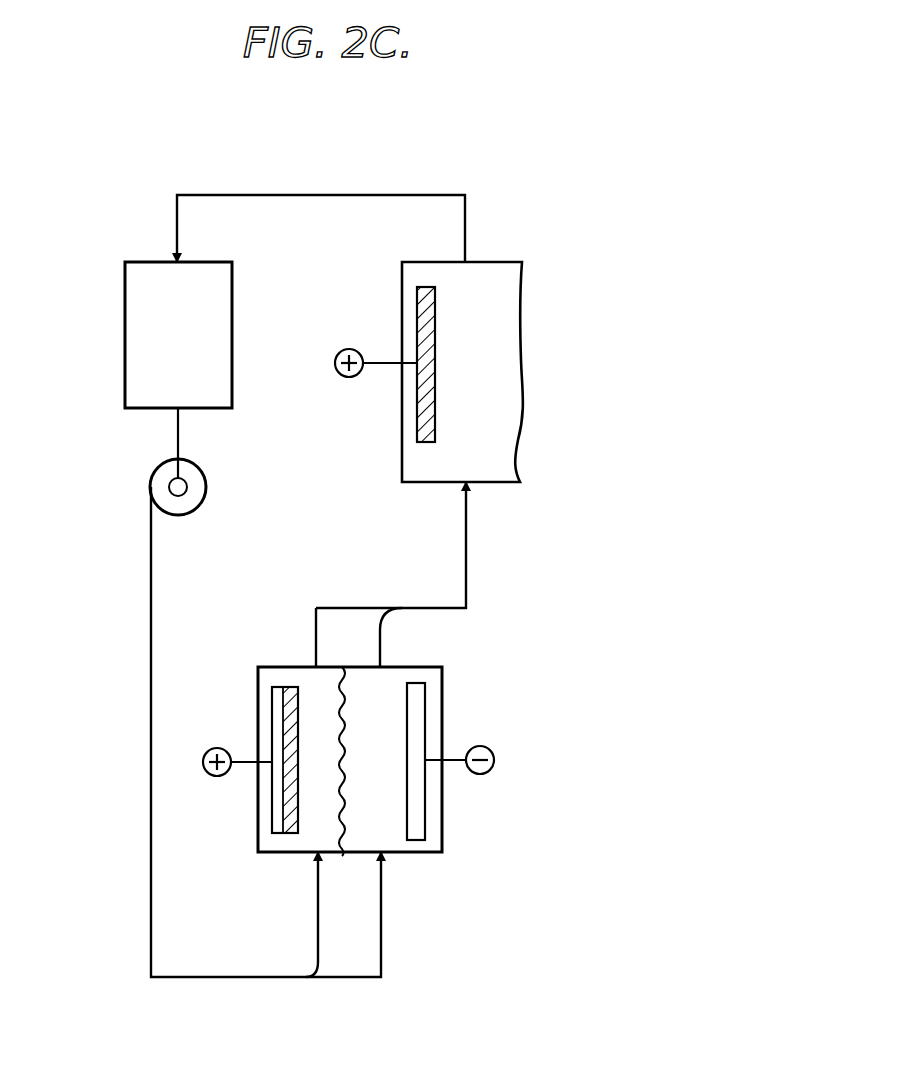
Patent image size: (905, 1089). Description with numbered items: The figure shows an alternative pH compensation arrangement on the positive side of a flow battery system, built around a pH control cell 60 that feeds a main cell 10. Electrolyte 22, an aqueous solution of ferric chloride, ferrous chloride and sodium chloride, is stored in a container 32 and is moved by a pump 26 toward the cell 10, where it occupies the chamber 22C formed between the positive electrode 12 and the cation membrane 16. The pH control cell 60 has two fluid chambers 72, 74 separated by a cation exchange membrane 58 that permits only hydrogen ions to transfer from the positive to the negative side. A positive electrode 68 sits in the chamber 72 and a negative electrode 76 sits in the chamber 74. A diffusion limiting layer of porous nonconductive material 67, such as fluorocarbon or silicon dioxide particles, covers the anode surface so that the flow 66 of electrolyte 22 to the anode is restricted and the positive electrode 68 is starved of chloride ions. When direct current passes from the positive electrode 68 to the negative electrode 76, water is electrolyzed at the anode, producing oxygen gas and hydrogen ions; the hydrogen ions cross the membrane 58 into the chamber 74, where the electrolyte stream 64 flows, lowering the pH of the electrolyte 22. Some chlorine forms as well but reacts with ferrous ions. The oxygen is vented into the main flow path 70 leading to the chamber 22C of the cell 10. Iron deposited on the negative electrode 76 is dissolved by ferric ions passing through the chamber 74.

The cell 10 is at (521, 237).
The positive electrode 12 is at (417, 310).
The cation membrane 16 is at (522, 285).
The aqueous solution 22 is at (338, 194).
The chamber 22C is at (486, 384).
The pump 26 is at (150, 488).
The container 32 is at (125, 348).
The cation exchange membrane 58 is at (348, 830).
The pH control cell 60 is at (450, 812).
The electrolyte stream 64 is at (380, 636).
The flow 66 is at (318, 925).
The porous nonconductive material 67 is at (298, 802).
The positive electrode 68 is at (272, 710).
The main flow path 70 is at (466, 525).
The fluid chamber 72 is at (325, 779).
The fluid chamber 74 is at (382, 779).
The negative electrode 76 is at (418, 703).